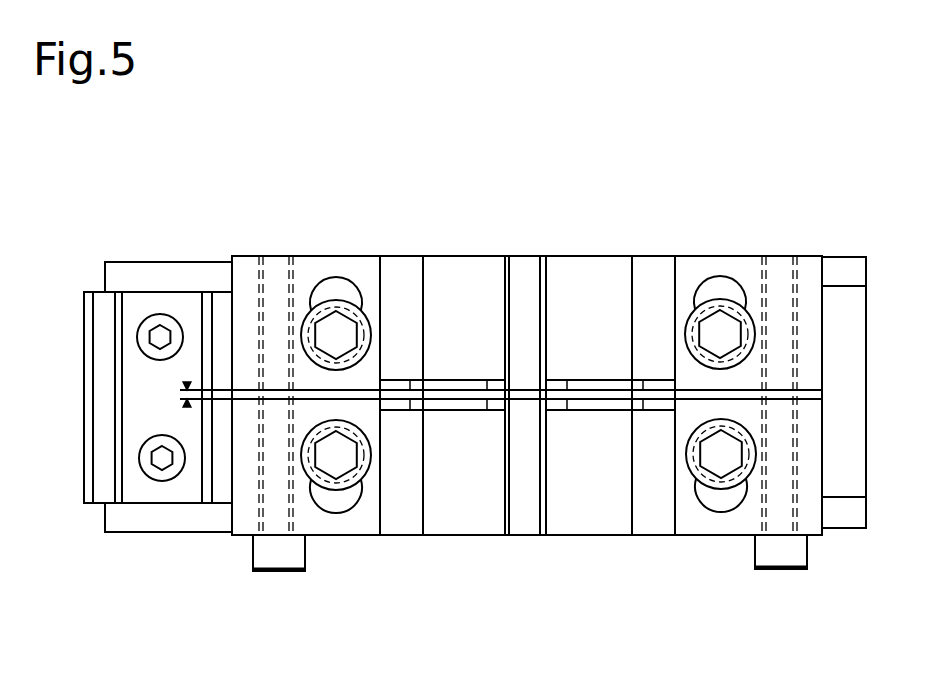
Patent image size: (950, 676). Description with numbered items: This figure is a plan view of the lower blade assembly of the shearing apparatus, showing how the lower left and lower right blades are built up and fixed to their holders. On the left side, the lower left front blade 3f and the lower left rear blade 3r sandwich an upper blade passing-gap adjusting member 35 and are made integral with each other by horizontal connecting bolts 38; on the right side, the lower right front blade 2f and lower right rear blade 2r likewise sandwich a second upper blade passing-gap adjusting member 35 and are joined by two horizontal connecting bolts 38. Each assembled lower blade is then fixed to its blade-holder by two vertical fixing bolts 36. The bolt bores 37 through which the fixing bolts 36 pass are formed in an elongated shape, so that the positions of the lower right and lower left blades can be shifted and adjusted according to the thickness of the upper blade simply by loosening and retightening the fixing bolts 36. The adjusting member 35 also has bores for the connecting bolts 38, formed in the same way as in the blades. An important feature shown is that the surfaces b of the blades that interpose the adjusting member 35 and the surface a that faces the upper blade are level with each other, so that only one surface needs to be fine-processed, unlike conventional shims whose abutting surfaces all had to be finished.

The vertical fixing bolt 36 is at (322, 320).
The bolt bore 37 is at (341, 288).
The upper blade passing-gap adjusting member 35 is at (363, 382).
The horizontal connecting bolt 38 is at (257, 555).
The lower left rear blade 3r is at (440, 265).
The lower left front blade 3f is at (452, 520).
The lower right rear blade 2r is at (642, 268).
The lower right front blade 2f is at (605, 522).
The surface facing the upper blade a is at (462, 387).
The surfaces interposing the adjusting member b is at (274, 390).